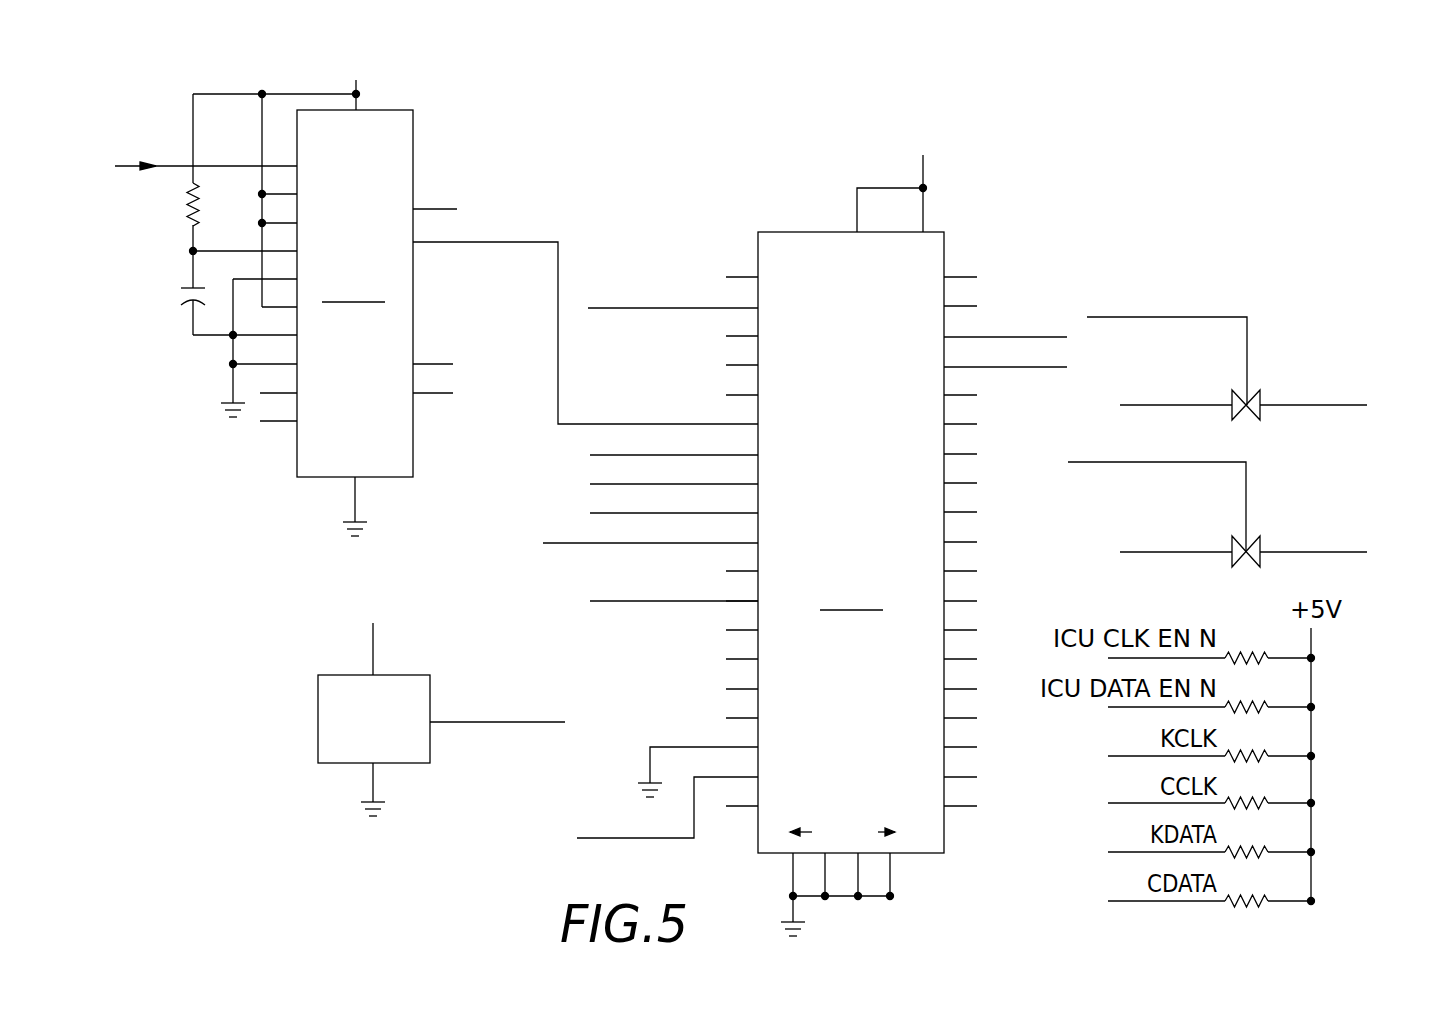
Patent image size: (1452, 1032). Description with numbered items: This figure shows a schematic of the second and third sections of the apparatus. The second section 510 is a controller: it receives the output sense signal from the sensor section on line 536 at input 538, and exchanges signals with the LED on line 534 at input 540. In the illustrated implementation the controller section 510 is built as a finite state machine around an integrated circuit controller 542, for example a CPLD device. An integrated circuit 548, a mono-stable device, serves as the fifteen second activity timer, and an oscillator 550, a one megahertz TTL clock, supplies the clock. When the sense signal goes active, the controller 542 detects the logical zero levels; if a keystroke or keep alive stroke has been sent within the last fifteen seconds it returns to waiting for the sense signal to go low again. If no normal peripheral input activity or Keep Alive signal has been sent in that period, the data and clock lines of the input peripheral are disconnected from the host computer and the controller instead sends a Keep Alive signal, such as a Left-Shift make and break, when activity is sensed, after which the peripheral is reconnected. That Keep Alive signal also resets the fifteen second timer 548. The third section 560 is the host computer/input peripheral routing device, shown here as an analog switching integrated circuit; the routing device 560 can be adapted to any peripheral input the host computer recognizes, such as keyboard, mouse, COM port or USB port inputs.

The second section 510 is at (628, 196).
The line 534 is at (645, 838).
The line 536 is at (632, 601).
The input 538 is at (758, 601).
The input 540 is at (758, 747).
The integrated circuit controller 542 is at (805, 528).
The integrated circuit 548 is at (286, 291).
The oscillator 550 is at (355, 723).
The third section 560 is at (1297, 452).